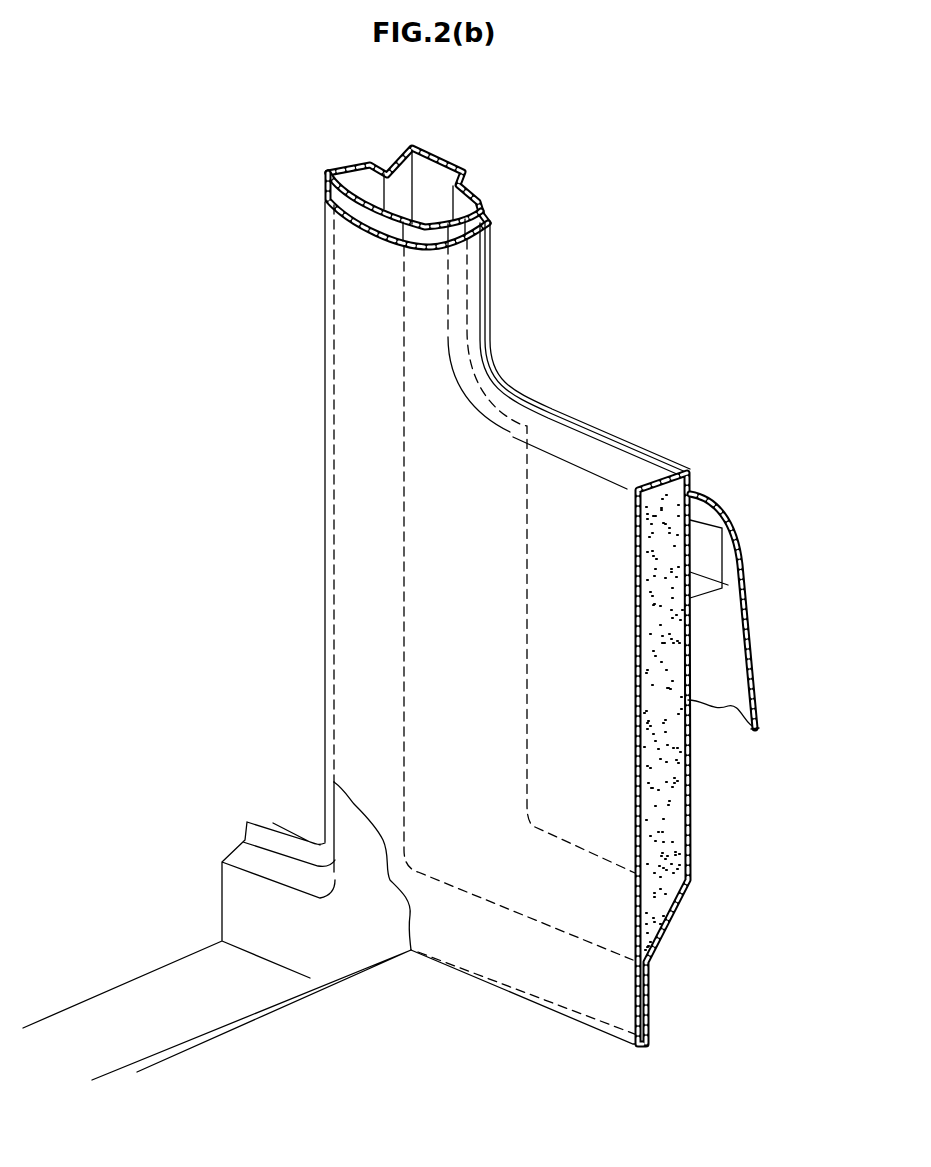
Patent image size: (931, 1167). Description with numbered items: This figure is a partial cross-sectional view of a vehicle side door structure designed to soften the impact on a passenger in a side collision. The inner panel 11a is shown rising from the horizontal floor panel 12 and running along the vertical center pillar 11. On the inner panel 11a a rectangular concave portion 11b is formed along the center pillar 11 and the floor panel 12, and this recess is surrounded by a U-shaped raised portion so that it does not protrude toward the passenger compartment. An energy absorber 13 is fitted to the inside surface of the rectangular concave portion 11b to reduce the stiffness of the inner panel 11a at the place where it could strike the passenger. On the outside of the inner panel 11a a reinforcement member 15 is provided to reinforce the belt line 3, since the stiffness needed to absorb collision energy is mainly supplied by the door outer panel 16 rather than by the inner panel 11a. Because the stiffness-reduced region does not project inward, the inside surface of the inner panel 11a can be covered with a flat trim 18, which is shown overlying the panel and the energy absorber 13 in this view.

The belt line 3 is at (756, 562).
The vertical center pillar 11 is at (350, 172).
The inner panel 11a is at (691, 812).
The rectangular concave portion 11b is at (577, 725).
The horizontal floor panel 12 is at (444, 1043).
The energy absorber 13 is at (668, 735).
The reinforcement member 15 is at (752, 513).
The door outer panel 16 is at (727, 655).
The trim 18 is at (605, 550).